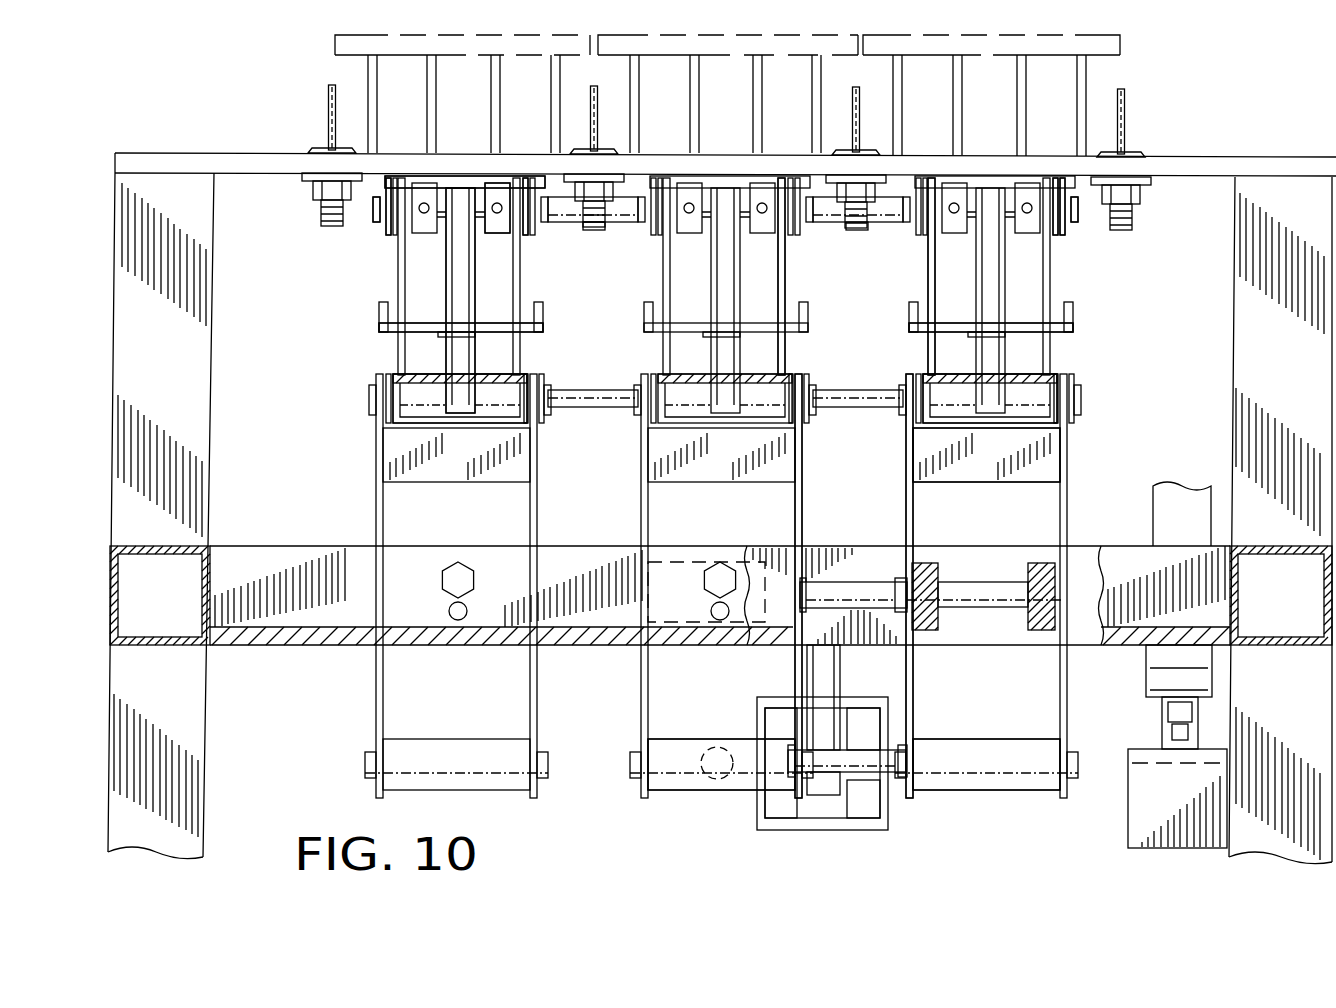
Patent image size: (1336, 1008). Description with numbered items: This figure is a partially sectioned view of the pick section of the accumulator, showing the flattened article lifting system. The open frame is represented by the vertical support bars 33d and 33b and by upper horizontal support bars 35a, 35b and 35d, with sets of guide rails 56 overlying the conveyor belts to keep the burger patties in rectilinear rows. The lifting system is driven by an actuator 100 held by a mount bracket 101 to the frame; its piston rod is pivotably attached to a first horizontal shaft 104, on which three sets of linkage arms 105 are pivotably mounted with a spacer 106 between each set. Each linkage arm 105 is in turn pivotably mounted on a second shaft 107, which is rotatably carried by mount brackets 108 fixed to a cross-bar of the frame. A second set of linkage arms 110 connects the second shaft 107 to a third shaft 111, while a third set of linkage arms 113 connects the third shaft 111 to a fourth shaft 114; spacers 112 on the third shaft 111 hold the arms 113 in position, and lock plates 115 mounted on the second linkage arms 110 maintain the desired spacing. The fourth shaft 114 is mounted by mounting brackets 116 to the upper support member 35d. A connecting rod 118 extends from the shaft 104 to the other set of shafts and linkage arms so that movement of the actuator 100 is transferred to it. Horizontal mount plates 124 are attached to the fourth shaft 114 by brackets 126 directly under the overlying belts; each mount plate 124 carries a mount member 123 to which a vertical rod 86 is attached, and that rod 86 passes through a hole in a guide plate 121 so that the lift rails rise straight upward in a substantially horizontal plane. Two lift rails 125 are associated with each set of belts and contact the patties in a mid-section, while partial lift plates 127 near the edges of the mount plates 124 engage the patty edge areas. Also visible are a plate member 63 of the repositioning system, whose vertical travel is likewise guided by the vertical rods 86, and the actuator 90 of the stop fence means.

The partial lift plate 127 is at (373, 72).
The lift rail 125 is at (494, 128).
The guide rail 56 is at (1125, 98).
The upper horizontal support bar 35d is at (1203, 165).
The horizontal mount plate 124 is at (377, 172).
The bracket 126 is at (383, 233).
The mount member 123 is at (482, 183).
The vertical rod 86 is at (463, 250).
The fourth shaft 114 is at (893, 208).
The third linkage arm 113 is at (930, 260).
The mounting bracket 116 is at (1072, 230).
The plate member 63 is at (380, 313).
The guide plate 121 is at (422, 378).
The third shaft 111 is at (812, 392).
The spacer 112 is at (1020, 398).
The vertical support bar 33d is at (186, 375).
The vertical support bar 33b is at (1308, 366).
The actuator 90 is at (1186, 497).
The second linkage arm 110 is at (907, 442).
The lock plate 115 is at (965, 465).
The second shaft 107 is at (888, 593).
The mount bracket 108 is at (927, 570).
The upper horizontal support bar 35b is at (186, 607).
The upper horizontal support bar 35a is at (1304, 609).
The linkage arm 105 is at (793, 660).
The mount bracket 101 is at (825, 667).
The first horizontal shaft 104 is at (870, 757).
The connecting rod 118 is at (710, 788).
The spacer 106 is at (955, 763).
The actuator 100 is at (832, 822).